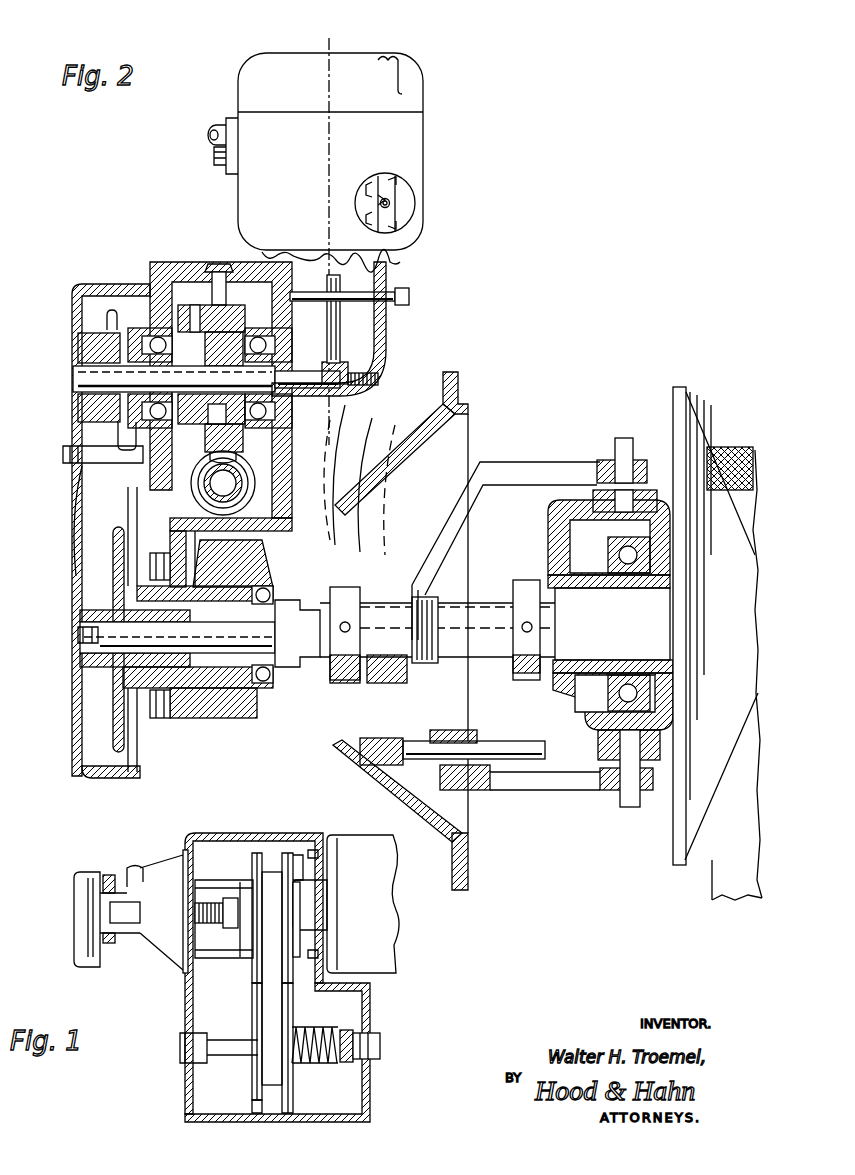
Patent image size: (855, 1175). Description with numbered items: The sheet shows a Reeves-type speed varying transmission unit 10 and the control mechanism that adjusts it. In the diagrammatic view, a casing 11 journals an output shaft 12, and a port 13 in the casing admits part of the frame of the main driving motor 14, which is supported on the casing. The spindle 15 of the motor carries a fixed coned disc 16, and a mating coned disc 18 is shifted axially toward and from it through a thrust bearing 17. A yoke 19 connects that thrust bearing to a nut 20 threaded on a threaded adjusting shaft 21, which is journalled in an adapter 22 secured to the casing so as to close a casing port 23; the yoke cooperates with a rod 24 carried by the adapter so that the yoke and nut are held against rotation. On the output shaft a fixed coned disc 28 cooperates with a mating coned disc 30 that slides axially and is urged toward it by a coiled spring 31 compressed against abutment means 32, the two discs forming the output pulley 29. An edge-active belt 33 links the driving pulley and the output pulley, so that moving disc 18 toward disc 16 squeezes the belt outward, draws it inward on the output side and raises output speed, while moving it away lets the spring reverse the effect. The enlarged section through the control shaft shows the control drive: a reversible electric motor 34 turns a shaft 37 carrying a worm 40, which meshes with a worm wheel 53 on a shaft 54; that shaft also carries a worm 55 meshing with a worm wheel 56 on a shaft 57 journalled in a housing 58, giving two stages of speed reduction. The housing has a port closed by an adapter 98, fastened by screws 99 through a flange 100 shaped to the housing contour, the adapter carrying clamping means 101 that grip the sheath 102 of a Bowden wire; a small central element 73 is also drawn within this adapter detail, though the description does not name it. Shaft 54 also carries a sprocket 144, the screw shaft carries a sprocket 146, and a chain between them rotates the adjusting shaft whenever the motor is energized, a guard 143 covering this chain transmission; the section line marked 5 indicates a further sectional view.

In FIG. 2, the section line 5- 5 is at (350, 33).
In FIG. 1, the speed varying transmission unit 10 is at (368, 1009).
In FIG. 1, the casing 11 is at (368, 1083).
In FIG. 1, the output shaft 12 is at (240, 1058).
In FIG. 1, the port 13 is at (302, 860).
In FIG. 1, the main driving motor 14 is at (346, 904).
In FIG. 1, the spindle 15 is at (296, 927).
In FIG. 1, the fixed coned disc 16 is at (292, 958).
In FIG. 2, the thrust bearing 17 is at (598, 749).
In FIG. 1, the thrust bearing 17 is at (231, 859).
In FIG. 2, the mating coned disc 18 is at (674, 408).
In FIG. 1, the mating coned disc 18 is at (255, 965).
In FIG. 2, the yoke 19 is at (560, 788).
In FIG. 1, the yoke 19 is at (234, 950).
In FIG. 2, the nut 20 is at (401, 585).
In FIG. 2, the threaded adjusting shaft 21 is at (454, 605).
In FIG. 1, the threaded adjusting shaft 21 is at (221, 902).
In FIG. 2, the adapter 22 is at (458, 385).
In FIG. 1, the adapter 22 is at (161, 912).
In FIG. 1, the casing port 23 is at (182, 857).
In FIG. 2, the rod 24 is at (496, 751).
In FIG. 1, the rod 24 is at (224, 924).
In FIG. 1, the coned disc 28 is at (252, 1104).
In FIG. 1, the output pulley 29 is at (247, 1023).
In FIG. 1, the mating coned disc 30 is at (292, 1097).
In FIG. 1, the coiled spring 31 is at (326, 1066).
In FIG. 1, the abutment means 32 is at (340, 1064).
In FIG. 2, the edge-active belt 33 is at (738, 447).
In FIG. 1, the edge-active belt 33 is at (272, 871).
In FIG. 2, the reversible electric motor 34 is at (366, 417).
In FIG. 2, the shaft 37 is at (223, 483).
In FIG. 2, the worm 40 is at (240, 464).
In FIG. 2, the worm wheel 53 is at (215, 455).
In FIG. 2, the shaft 54 is at (74, 379).
In FIG. 2, the worm 55 is at (337, 365).
In FIG. 2, the worm wheel 56 is at (378, 371).
In FIG. 2, the shaft 57 is at (339, 312).
In FIG. 2, the housing 58 is at (394, 325).
In FIG. 2, the screw 73 is at (390, 203).
In FIG. 2, the adapter 98 is at (400, 200).
In FIG. 2, the screws 99 is at (395, 182).
In FIG. 2, the flange 100 is at (376, 183).
In FIG. 2, the clamping means 101 is at (378, 216).
In FIG. 2, the sheath 102 is at (382, 198).
In FIG. 2, the guard 143 is at (76, 571).
In FIG. 2, the sprocket 144 is at (78, 421).
In FIG. 2, the sprocket 146 is at (118, 725).
In FIG. 1, the sprocket 146 is at (74, 940).